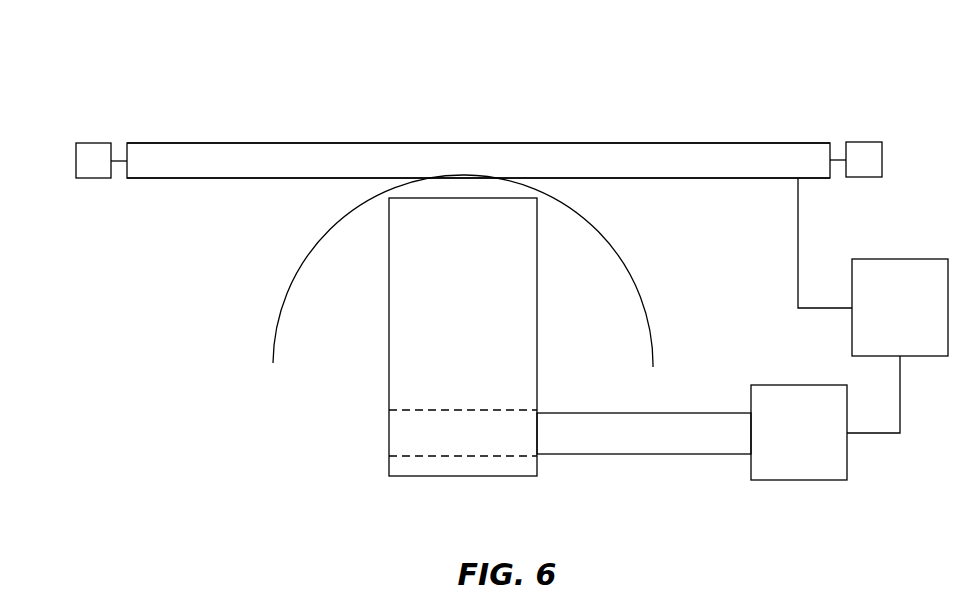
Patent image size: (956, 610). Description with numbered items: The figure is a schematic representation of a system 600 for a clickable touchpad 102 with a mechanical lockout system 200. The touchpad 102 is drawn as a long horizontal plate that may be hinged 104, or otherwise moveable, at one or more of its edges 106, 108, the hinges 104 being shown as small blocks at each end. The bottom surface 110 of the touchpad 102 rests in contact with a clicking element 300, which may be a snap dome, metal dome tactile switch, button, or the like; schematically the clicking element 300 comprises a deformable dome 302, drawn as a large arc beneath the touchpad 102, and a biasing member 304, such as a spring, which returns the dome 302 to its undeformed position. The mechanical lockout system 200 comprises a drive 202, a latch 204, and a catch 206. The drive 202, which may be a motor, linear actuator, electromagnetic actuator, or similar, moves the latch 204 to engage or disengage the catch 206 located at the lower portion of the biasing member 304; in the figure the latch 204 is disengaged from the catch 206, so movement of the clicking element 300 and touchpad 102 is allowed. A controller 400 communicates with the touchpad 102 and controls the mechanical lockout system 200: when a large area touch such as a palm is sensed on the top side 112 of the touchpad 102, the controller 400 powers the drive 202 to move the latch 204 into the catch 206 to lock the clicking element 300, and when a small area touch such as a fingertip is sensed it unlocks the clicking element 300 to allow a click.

The system 600 is at (103, 47).
The touchpad 102 is at (462, 170).
The hinge 104 is at (94, 186).
The edge 106 is at (127, 132).
The edge 108 is at (829, 135).
The bottom surface 110 is at (236, 186).
The top side 112 is at (257, 136).
The clicking element 300 is at (508, 325).
The deformable dome 302 is at (611, 232).
The biasing member 304 is at (448, 276).
The mechanical lockout system 200 is at (644, 399).
The drive 202 is at (783, 443).
The latch 204 is at (635, 445).
The catch 206 is at (449, 445).
The controller 400 is at (885, 320).